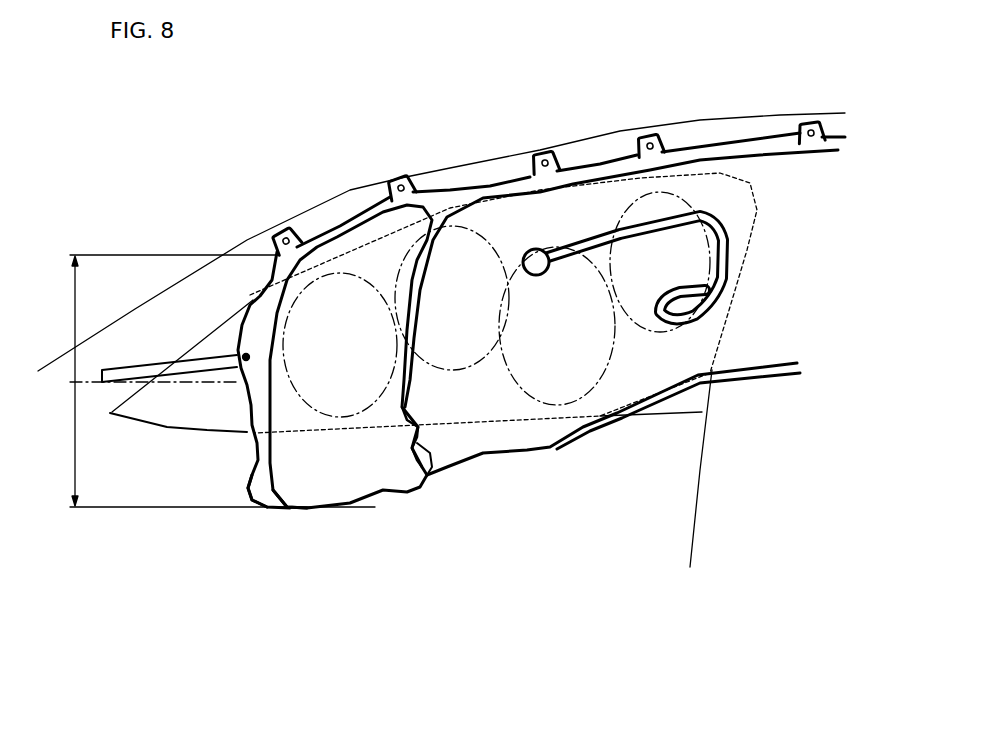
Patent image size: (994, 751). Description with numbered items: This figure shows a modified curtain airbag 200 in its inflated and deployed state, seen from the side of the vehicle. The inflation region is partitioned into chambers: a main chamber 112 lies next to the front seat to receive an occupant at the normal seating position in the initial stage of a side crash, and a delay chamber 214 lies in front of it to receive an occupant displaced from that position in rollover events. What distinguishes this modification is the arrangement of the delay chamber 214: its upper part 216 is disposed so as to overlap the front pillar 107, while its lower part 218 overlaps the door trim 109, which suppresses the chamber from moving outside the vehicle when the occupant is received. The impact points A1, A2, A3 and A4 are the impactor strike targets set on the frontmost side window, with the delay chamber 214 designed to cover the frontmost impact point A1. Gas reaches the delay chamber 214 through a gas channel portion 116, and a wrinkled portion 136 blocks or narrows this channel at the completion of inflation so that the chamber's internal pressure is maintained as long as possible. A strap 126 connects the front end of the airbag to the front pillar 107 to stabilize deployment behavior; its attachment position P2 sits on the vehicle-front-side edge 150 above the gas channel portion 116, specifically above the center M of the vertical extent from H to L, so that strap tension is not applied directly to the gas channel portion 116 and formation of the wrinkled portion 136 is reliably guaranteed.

The airbag 200 is at (717, 131).
The front pillar 107 is at (253, 252).
The upper part 216 is at (333, 242).
The door trim 109 is at (220, 465).
The strap 126 is at (118, 368).
The attachment position P2 is at (246, 354).
The impact point A1 is at (345, 343).
The impact point A2 is at (557, 333).
The impact point A3 is at (453, 295).
The impact point A4 is at (690, 258).
The delay chamber 214 is at (280, 413).
The vehicle-front-side edge 150 is at (262, 490).
The lower part 218 is at (297, 478).
The wrinkled portion 136 is at (417, 467).
The gas channel portion 116 is at (432, 453).
The main chamber 112 is at (490, 413).
The upper end of vertical direction H is at (166, 375).
The center in vertical direction M is at (147, 383).
The lower end of vertical direction L is at (214, 511).